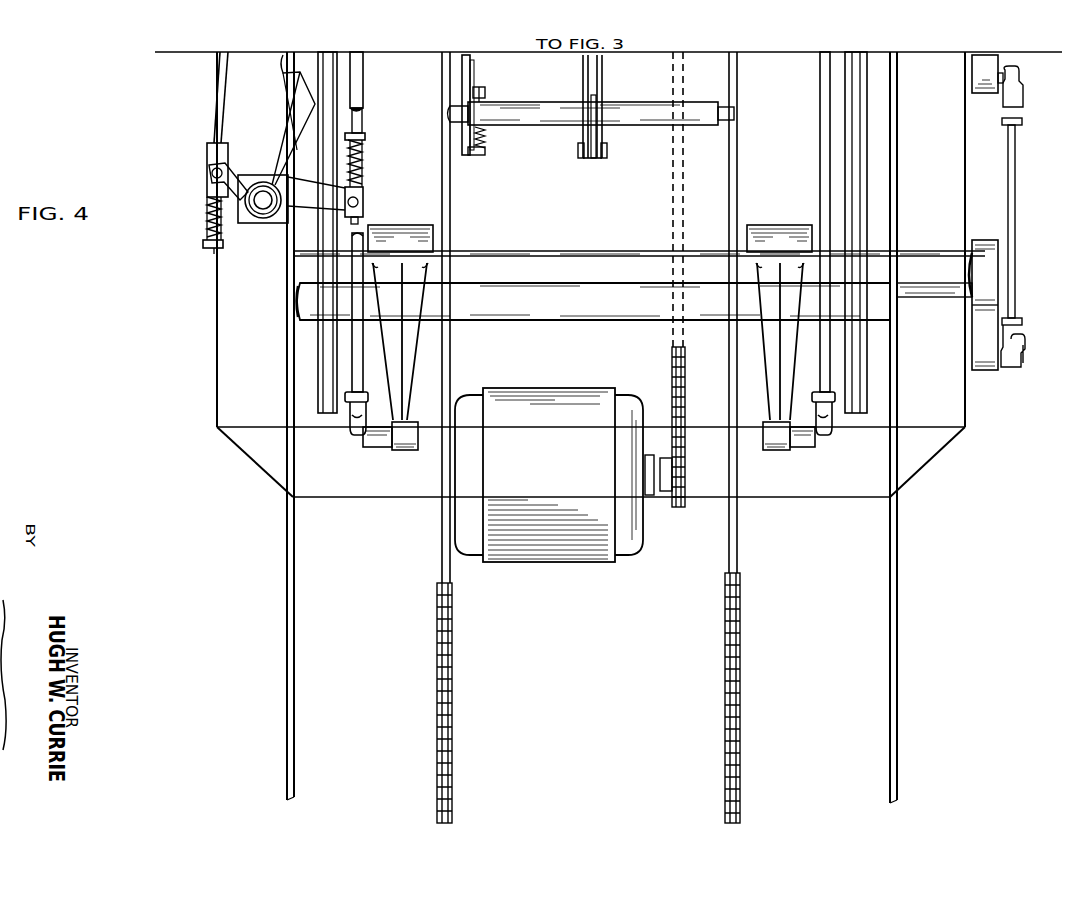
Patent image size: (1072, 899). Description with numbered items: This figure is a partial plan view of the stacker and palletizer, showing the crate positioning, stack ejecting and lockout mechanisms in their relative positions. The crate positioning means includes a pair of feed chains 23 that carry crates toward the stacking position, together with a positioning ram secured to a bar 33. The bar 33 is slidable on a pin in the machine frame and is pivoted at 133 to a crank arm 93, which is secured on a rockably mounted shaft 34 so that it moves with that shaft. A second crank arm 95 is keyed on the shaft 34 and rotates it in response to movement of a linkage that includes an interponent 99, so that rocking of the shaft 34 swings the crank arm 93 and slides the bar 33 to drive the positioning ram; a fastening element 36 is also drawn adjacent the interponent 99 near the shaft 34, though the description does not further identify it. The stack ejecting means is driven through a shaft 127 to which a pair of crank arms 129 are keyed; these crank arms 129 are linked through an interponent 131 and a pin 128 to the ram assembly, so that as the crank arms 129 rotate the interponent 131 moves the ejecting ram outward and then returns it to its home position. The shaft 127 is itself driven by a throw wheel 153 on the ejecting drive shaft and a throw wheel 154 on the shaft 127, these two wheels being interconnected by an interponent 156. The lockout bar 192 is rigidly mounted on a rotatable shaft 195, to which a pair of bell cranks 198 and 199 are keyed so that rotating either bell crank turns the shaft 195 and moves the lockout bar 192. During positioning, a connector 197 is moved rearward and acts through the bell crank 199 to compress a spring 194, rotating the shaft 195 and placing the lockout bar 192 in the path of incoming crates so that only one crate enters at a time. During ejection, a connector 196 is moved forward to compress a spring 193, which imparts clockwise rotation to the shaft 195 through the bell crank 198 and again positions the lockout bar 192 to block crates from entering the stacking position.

The feed chains 23 is at (442, 120).
The bar 33 is at (590, 76).
The rockably mounted shaft 34 is at (625, 100).
The bolt 36 is at (481, 82).
The crank arm 93 is at (592, 160).
The second crank arm 95 is at (686, 389).
The interponent 99 is at (467, 156).
The shaft 127 is at (588, 250).
The pin 128 is at (375, 448).
The crank arms 129 is at (393, 225).
The interponent 131 is at (360, 100).
The pivot 133 is at (607, 154).
The throw wheel 153 is at (975, 82).
The throw wheel 154 is at (985, 240).
The interponent 156 is at (1015, 224).
The lockout bar 192 is at (282, 155).
The spring 193 is at (211, 215).
The spring 194 is at (364, 152).
The rotatable shaft 195 is at (264, 208).
The connector 196 is at (222, 98).
The connector 197 is at (357, 125).
The bell crank 198 is at (211, 185).
The bell crank 199 is at (358, 194).